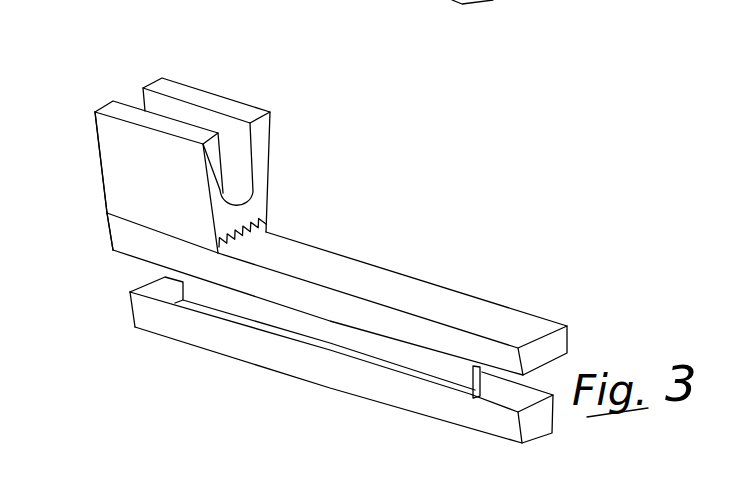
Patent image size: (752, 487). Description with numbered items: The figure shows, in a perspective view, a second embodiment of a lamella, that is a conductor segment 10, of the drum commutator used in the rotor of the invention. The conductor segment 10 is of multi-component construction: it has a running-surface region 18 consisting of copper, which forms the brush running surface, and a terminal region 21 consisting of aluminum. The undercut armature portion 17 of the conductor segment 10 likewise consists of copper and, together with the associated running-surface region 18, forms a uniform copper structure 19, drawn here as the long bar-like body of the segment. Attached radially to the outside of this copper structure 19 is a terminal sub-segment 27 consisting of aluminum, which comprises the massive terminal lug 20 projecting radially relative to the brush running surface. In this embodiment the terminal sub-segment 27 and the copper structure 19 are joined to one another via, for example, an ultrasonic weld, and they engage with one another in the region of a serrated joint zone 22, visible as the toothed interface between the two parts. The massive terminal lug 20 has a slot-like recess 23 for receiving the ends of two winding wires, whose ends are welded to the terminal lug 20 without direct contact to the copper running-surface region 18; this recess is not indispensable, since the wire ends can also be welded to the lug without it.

The conductor segment 10 is at (466, 243).
The armature portion 17 is at (287, 384).
The running-surface region 18 is at (535, 307).
The copper structure 19 is at (273, 292).
The terminal lug 20 is at (108, 184).
The terminal region 21 is at (282, 153).
The serrated joint zone 22 is at (267, 218).
The slot-like recess 23 is at (128, 92).
The terminal sub-segment 27 is at (93, 197).